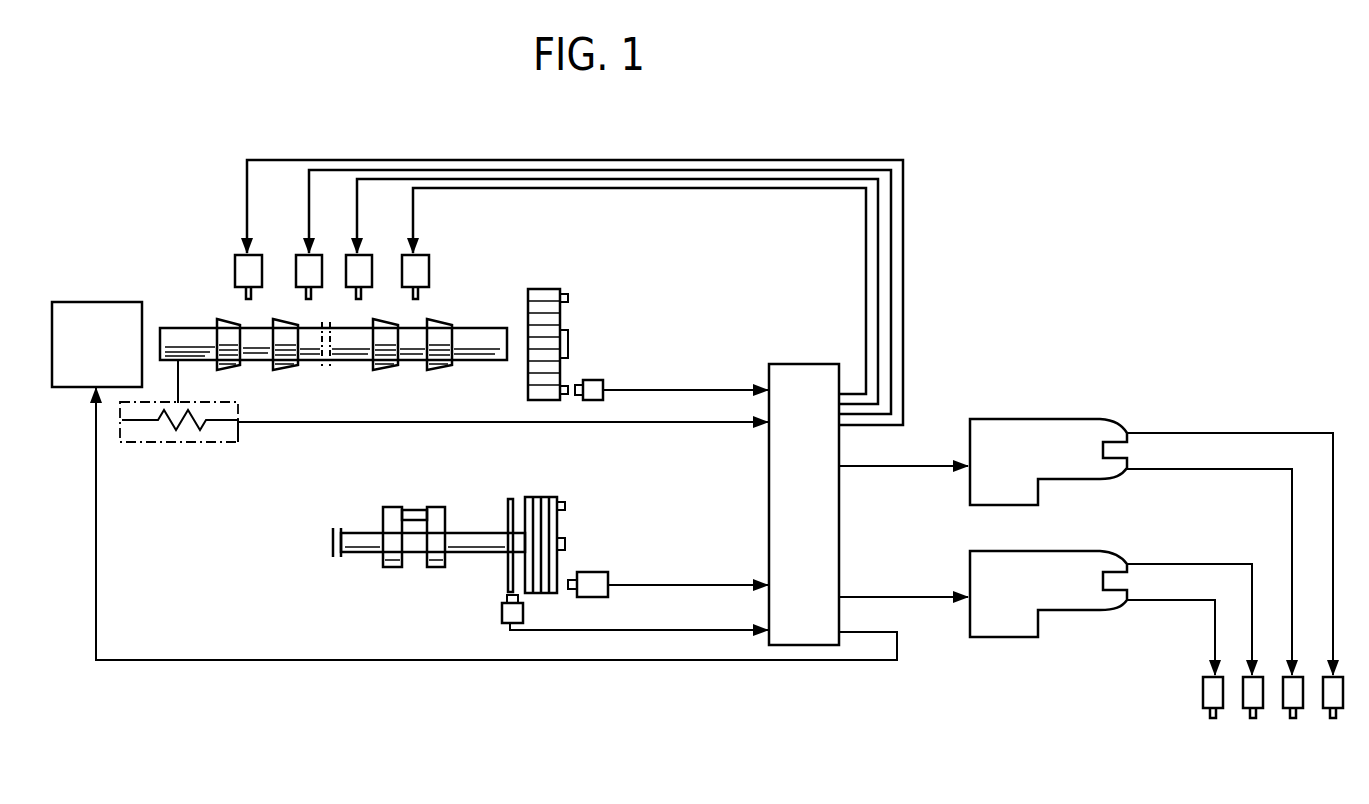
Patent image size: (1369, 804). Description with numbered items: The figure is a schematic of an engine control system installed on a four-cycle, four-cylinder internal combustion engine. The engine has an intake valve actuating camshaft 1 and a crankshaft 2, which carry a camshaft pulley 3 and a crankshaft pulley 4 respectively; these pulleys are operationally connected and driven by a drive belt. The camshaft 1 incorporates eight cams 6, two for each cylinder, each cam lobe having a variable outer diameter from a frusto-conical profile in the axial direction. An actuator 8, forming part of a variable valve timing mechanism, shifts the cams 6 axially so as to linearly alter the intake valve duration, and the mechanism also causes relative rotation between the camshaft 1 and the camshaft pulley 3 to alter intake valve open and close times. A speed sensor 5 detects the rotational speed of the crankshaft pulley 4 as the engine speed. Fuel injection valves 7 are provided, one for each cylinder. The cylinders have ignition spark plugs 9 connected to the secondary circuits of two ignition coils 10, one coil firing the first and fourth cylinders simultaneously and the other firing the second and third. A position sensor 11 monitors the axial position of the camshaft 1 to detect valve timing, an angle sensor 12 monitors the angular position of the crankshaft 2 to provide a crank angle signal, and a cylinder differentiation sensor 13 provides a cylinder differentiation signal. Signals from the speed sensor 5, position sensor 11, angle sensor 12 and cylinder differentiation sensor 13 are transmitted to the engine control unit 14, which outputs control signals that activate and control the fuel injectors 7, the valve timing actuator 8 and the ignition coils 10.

The intake valve actuating camshaft 1 is at (470, 328).
The crankshaft 2 is at (475, 533).
The camshaft pulley 3 is at (560, 290).
The crankshaft pulley 4 is at (548, 497).
The speed sensor 5 is at (605, 572).
The cams 6 is at (218, 325).
The fuel injection valves 7 is at (258, 255).
The actuator 8 is at (78, 302).
The ignition spark plugs 9 is at (1203, 703).
The ignition coils 10 is at (1016, 419).
The position sensor 11 is at (208, 425).
The angle sensor 12 is at (502, 612).
The cylinder differentiation sensor 13 is at (603, 382).
The engine control unit 14 is at (769, 362).